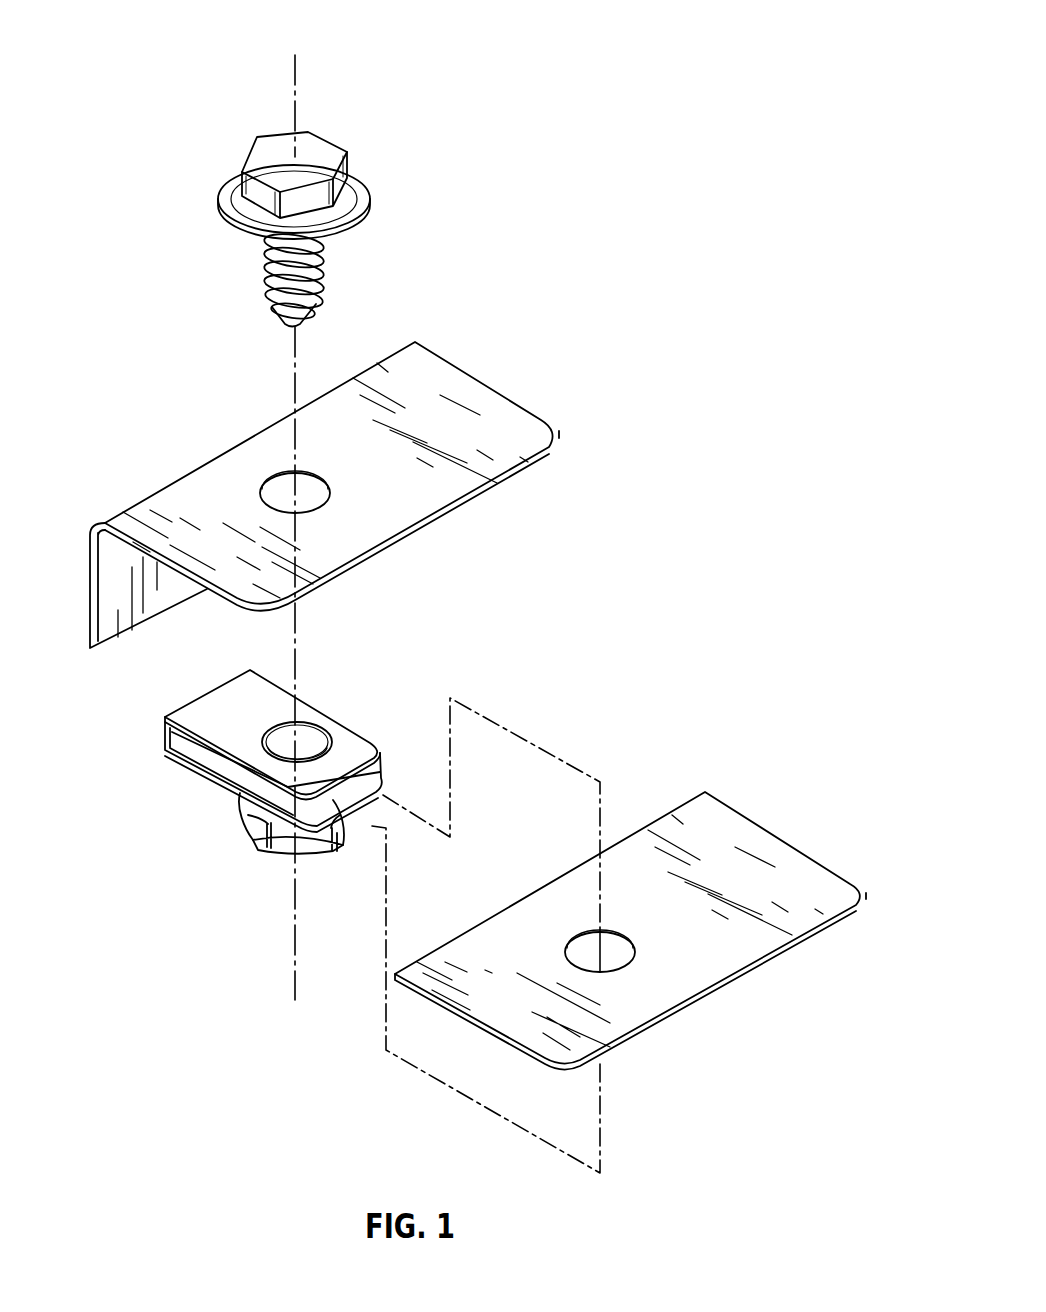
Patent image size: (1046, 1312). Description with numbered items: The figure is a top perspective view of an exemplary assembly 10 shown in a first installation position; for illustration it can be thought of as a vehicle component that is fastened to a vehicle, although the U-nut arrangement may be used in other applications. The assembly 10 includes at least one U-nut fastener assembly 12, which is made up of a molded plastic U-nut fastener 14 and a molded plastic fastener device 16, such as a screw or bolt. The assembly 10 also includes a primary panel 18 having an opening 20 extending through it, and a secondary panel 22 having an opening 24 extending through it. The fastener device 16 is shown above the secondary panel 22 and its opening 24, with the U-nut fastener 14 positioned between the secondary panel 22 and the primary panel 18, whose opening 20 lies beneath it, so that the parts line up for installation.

The assembly 10 is at (152, 152).
The U-nut fastener assembly 12 is at (392, 96).
The U-nut fastener 14 is at (225, 707).
The fastener device 16 is at (356, 177).
The primary panel 18 is at (619, 935).
The opening 20 is at (612, 948).
The secondary panel 22 is at (324, 495).
The opening 24 is at (280, 493).